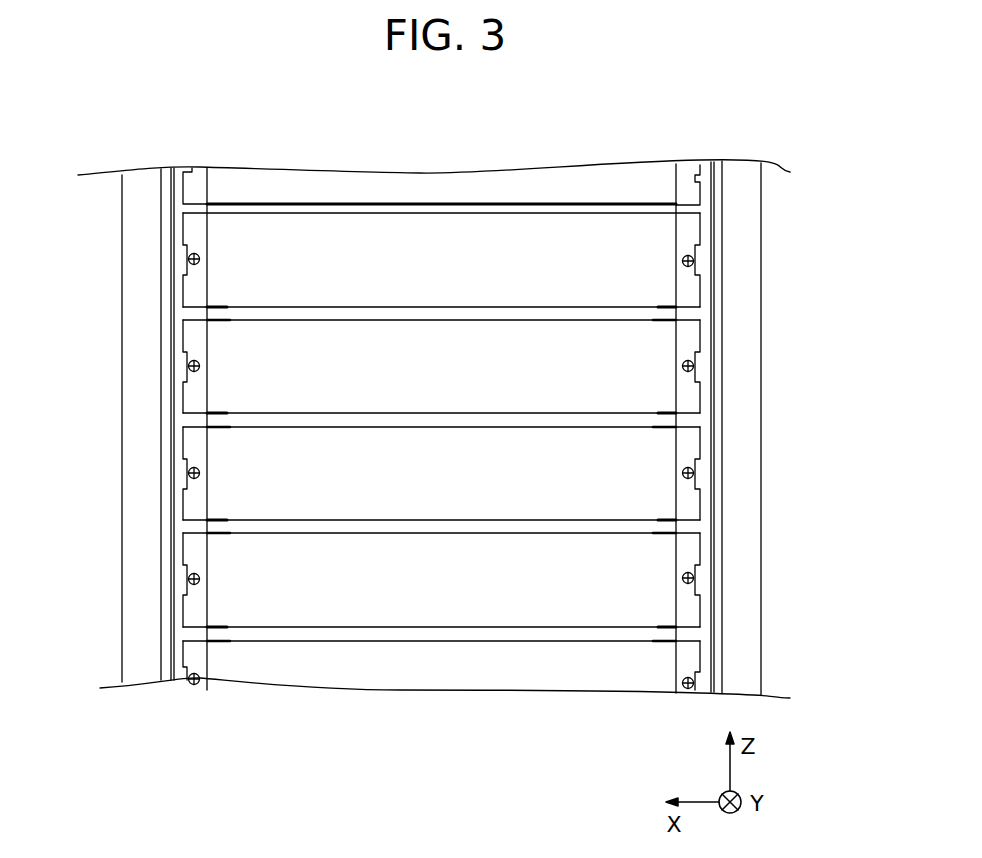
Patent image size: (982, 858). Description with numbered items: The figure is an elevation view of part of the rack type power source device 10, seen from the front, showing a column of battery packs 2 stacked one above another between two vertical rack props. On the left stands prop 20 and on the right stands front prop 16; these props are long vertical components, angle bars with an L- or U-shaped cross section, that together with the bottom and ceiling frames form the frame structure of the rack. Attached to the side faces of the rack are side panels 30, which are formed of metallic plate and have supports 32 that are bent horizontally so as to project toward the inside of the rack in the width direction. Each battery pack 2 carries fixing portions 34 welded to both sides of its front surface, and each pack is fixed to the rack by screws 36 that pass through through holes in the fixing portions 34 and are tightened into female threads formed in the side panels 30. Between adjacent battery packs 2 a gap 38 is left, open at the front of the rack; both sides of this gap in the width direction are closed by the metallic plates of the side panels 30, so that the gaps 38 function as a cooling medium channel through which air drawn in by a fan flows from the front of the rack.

The battery pack 2 is at (463, 276).
The power source device 10 is at (470, 137).
The front prop 16 is at (763, 488).
The prop 20 is at (122, 519).
The side panel 30 is at (183, 420).
The support 32 is at (217, 309).
The fixing portion 34 is at (188, 398).
The screw 36 is at (194, 265).
The gap 38 is at (363, 206).